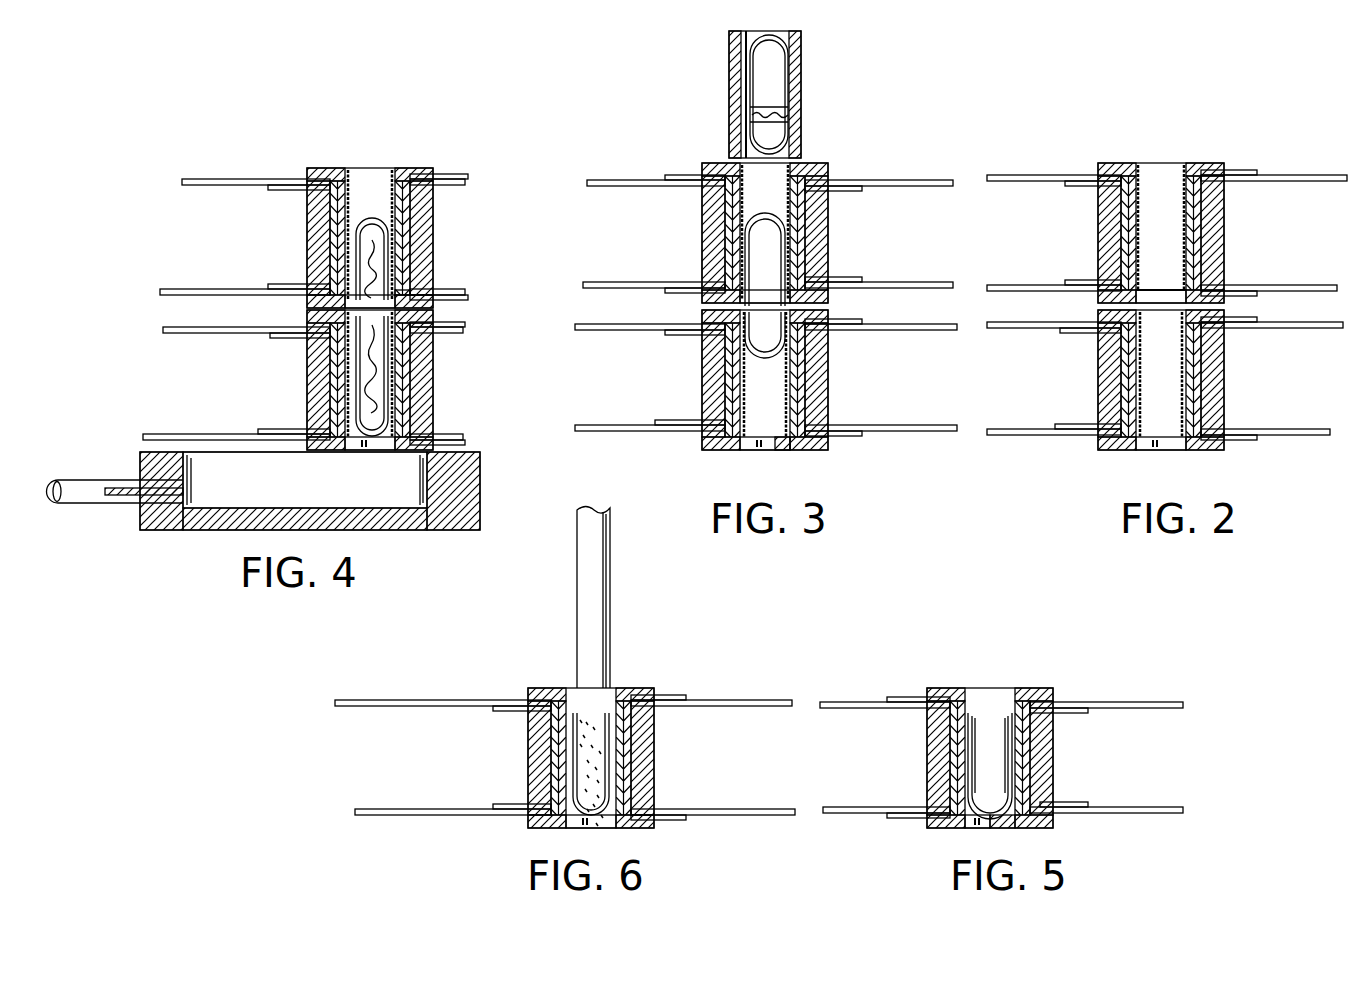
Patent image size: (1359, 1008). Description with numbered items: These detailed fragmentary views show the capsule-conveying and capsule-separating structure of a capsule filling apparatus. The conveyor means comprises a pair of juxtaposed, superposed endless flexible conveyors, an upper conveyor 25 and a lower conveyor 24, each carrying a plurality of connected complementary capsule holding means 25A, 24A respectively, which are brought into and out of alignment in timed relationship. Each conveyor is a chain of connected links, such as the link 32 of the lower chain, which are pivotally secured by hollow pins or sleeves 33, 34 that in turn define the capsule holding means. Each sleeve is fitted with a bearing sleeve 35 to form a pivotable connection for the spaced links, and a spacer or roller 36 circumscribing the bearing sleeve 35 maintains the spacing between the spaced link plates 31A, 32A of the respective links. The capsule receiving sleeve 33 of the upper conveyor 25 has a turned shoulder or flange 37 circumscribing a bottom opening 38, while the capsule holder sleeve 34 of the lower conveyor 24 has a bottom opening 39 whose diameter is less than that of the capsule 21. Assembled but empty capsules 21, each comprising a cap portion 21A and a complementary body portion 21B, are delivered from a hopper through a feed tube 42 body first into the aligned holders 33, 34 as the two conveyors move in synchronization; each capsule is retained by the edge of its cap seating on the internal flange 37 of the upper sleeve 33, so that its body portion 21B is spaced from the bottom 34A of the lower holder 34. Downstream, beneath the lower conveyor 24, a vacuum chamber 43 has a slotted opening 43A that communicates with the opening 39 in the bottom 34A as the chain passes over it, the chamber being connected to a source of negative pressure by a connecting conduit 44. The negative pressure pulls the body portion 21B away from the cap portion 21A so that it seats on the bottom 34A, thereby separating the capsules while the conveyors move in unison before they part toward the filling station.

In FIG. 4, the capsule 21 is at (385, 198).
In FIG. 3, the capsule 21 is at (778, 200).
In FIG. 4, the cap portion 21A is at (375, 257).
In FIG. 3, the cap portion 21A is at (772, 257).
In FIG. 4, the body portion 21B is at (375, 380).
In FIG. 3, the body portion 21B is at (764, 338).
In FIG. 6, the body portion 21B is at (578, 740).
In FIG. 5, the body portion 21B is at (975, 748).
In FIG. 6, the lower conveyor 24 is at (473, 818).
In FIG. 5, the lower conveyor 24 is at (873, 818).
In FIG. 3, the capsule holding means 24A is at (839, 453).
In FIG. 2, the capsule holding means 24A is at (1207, 456).
In FIG. 4, the upper conveyor 25 is at (218, 181).
In FIG. 3, the upper conveyor 25 is at (604, 181).
In FIG. 2, the upper conveyor 25 is at (1028, 175).
In FIG. 4, the capsule holding means 25A is at (378, 155).
In FIG. 3, the capsule holding means 25A is at (721, 158).
In FIG. 2, the capsule holding means 25A is at (1129, 146).
In FIG. 2, the link plate 31A is at (998, 183).
In FIG. 6, the link 32 is at (740, 718).
In FIG. 5, the link 32 is at (1157, 713).
In FIG. 2, the link plate 32A is at (998, 330).
In FIG. 6, the link plate 32A is at (462, 698).
In FIG. 5, the link plate 32A is at (877, 685).
In FIG. 2, the capsule receiving sleeve 33 is at (1163, 180).
In FIG. 5, the capsule holder sleeve 34 is at (1010, 816).
In FIG. 3, the bottom 34A is at (785, 450).
In FIG. 4, the bearing sleeve 35 is at (336, 227).
In FIG. 3, the bearing sleeve 35 is at (732, 218).
In FIG. 2, the bearing sleeve 35 is at (1128, 223).
In FIG. 6, the bearing sleeve 35 is at (624, 737).
In FIG. 5, the bearing sleeve 35 is at (1023, 742).
In FIG. 4, the spacer or roller 36 is at (309, 255).
In FIG. 3, the spacer or roller 36 is at (704, 247).
In FIG. 2, the spacer or roller 36 is at (1100, 253).
In FIG. 6, the spacer or roller 36 is at (656, 768).
In FIG. 5, the spacer or roller 36 is at (1055, 775).
In FIG. 4, the turned shoulder or flange 37 is at (408, 285).
In FIG. 2, the turned shoulder or flange 37 is at (1141, 289).
In FIG. 2, the bottom opening 38 is at (1158, 300).
In FIG. 4, the bottom opening 39 is at (360, 450).
In FIG. 3, the bottom opening 39 is at (763, 449).
In FIG. 2, the bottom opening 39 is at (1162, 449).
In FIG. 6, the bottom opening 39 is at (580, 828).
In FIG. 5, the bottom opening 39 is at (977, 828).
In FIG. 3, the feed tube 42 is at (800, 87).
In FIG. 4, the vacuum chamber 43 is at (303, 488).
In FIG. 4, the slotted opening 43A is at (223, 452).
In FIG. 4, the connecting conduit 44 is at (90, 487).